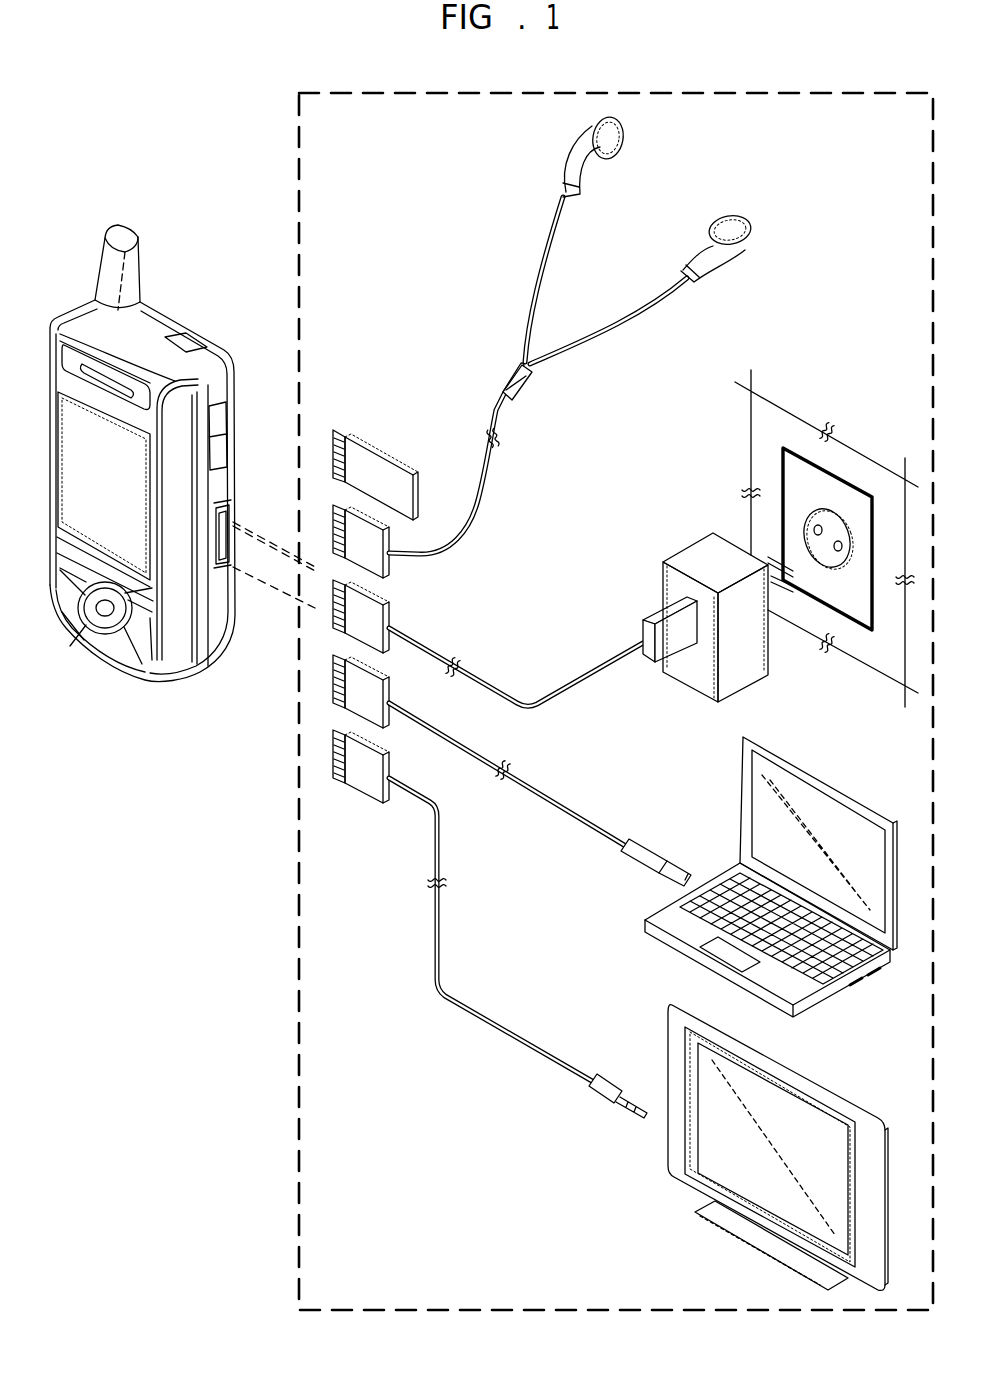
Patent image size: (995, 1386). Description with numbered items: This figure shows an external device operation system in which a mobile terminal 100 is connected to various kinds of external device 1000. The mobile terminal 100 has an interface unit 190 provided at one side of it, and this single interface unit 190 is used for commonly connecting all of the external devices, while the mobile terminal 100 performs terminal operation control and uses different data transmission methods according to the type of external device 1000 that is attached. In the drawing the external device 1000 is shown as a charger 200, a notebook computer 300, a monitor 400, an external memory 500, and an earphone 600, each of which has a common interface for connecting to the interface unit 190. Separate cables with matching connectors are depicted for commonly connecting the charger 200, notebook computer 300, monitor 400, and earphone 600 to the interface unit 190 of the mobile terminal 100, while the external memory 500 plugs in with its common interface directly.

The external device 1000 is at (296, 156).
The mobile terminal 100 is at (158, 682).
The interface unit 190 is at (235, 490).
The charger 200 is at (490, 686).
The notebook computer 300 is at (570, 806).
The monitor 400 is at (515, 1032).
The external memory 500 is at (387, 450).
The earphone 600 is at (497, 478).